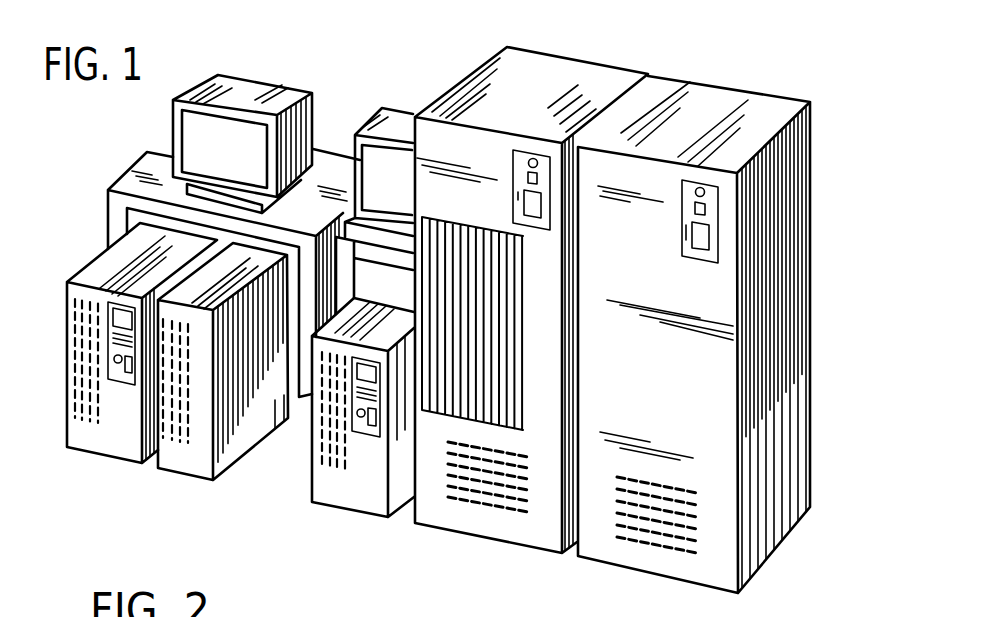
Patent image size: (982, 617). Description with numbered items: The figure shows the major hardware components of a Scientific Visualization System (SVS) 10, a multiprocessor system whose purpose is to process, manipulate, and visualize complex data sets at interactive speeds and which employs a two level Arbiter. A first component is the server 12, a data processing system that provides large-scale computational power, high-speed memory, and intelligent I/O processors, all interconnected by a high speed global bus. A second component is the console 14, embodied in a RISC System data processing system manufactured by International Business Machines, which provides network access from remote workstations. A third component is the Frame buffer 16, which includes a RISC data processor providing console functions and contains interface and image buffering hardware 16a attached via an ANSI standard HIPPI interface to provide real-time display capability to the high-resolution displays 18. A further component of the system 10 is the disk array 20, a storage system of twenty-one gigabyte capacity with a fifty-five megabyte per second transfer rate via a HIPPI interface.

The Scientific Visualization System (SVS) 10 is at (92, 181).
The server 12 is at (520, 546).
The console 14 is at (355, 511).
The Frame buffer 16 is at (98, 456).
The interface and image buffering hardware 16a is at (237, 459).
The high-resolution displays 18 is at (270, 80).
The disk array 20 is at (813, 507).